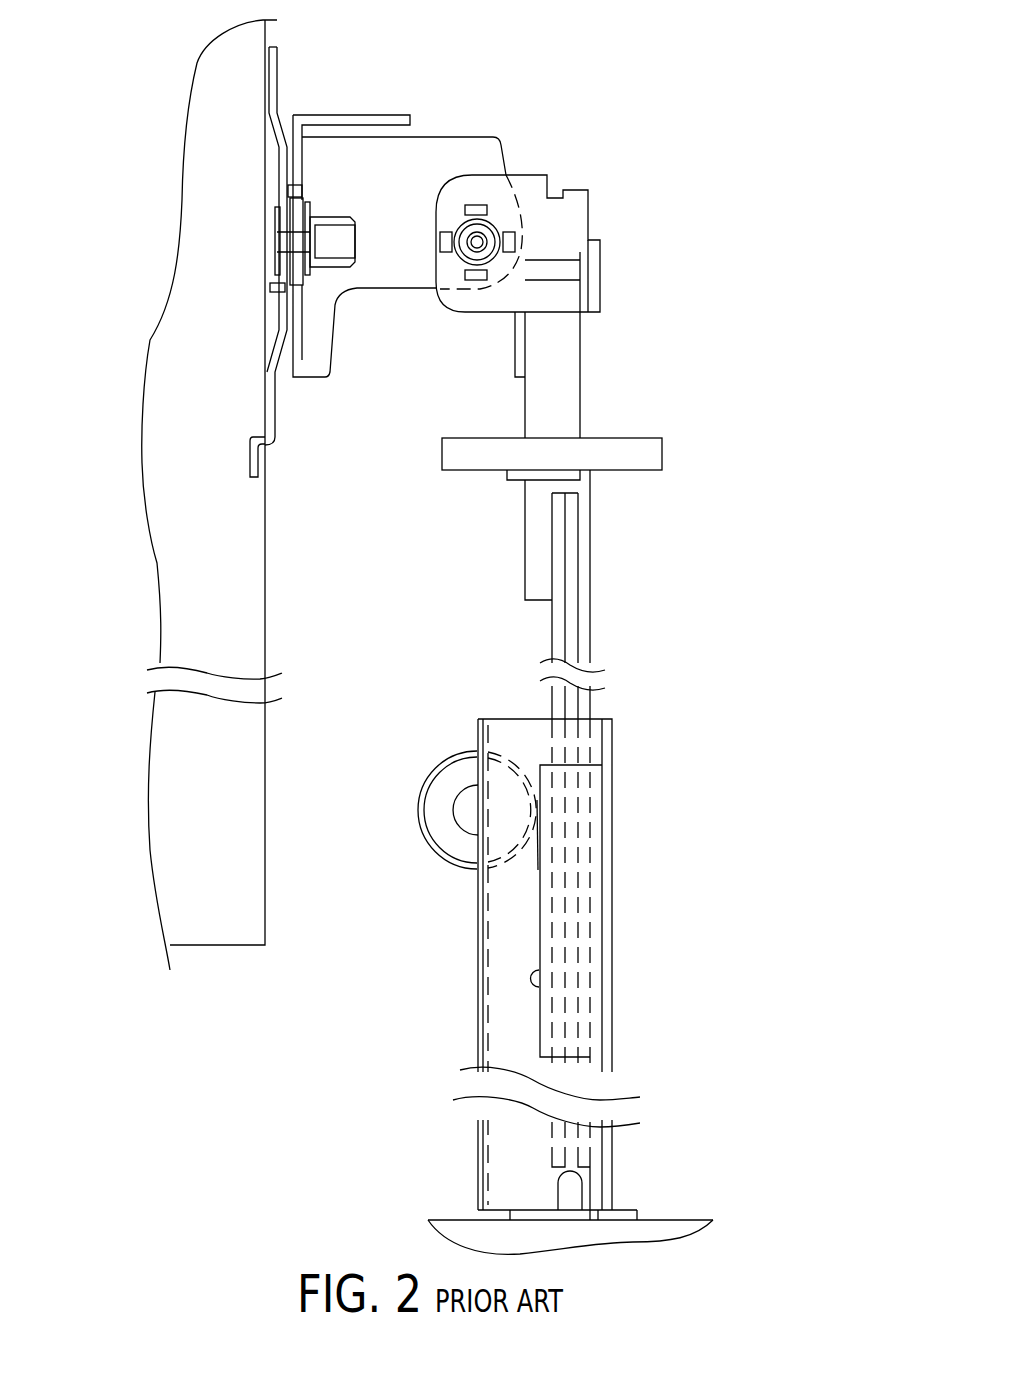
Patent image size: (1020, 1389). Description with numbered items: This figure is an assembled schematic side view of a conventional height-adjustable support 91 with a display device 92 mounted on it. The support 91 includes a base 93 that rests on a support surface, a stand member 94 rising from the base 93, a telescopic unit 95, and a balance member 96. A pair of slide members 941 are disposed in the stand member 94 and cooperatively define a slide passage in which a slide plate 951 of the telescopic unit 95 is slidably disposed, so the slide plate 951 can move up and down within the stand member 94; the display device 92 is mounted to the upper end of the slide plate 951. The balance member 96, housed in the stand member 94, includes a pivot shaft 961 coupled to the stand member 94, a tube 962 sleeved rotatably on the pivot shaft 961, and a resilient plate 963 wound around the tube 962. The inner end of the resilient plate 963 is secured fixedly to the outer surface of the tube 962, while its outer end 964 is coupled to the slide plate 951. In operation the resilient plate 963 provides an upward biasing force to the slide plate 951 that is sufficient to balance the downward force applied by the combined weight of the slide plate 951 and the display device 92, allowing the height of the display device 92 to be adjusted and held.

The height-adjustable support 91 is at (643, 760).
The display device 92 is at (143, 210).
The base 93 is at (408, 1188).
The stand member 94 is at (463, 911).
The slide member 941 is at (545, 1017).
The telescopic unit 95 is at (526, 646).
The slide plate 951 is at (570, 627).
The balance member 96 is at (429, 830).
The pivot shaft 961 is at (466, 803).
The tube 962 is at (432, 819).
The resilient plate 963 is at (537, 870).
The outer end 964 is at (530, 978).